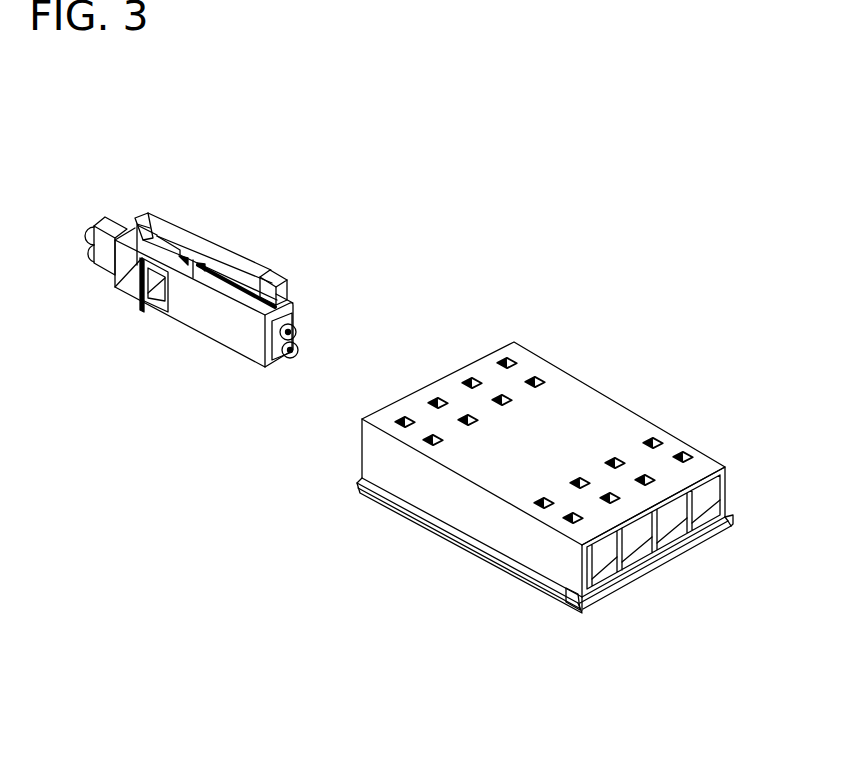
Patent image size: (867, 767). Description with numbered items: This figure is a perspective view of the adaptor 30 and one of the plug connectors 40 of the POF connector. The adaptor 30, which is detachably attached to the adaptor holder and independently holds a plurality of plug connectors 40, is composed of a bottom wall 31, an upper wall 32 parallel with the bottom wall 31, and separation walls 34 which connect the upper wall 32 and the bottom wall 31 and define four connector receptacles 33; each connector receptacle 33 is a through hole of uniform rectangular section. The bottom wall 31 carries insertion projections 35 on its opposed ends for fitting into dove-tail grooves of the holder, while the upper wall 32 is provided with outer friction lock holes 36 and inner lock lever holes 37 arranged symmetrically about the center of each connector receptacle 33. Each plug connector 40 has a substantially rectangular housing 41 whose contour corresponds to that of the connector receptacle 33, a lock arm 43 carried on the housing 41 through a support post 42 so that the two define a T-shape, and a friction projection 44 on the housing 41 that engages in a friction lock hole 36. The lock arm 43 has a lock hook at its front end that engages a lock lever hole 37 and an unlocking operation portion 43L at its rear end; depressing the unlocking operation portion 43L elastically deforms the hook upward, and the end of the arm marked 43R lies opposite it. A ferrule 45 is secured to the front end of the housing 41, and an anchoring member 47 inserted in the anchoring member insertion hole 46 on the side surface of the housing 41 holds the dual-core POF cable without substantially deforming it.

The adaptor 30 is at (623, 364).
The bottom wall 31 is at (635, 578).
The upper wall 32 is at (703, 473).
The connector receptacles 33 is at (703, 512).
The separation walls 34 is at (731, 519).
The insertion projections 35 is at (732, 523).
The friction lock holes 36 is at (510, 361).
The lock lever holes 37 is at (537, 378).
The plug connector 40 is at (257, 198).
The housing 41 is at (218, 333).
The support post 42 is at (193, 278).
The lock arm 43 is at (226, 256).
The latch arm rear end 43R is at (138, 219).
The unlocking operation portion 43L is at (283, 273).
The friction projection 44 is at (116, 281).
The ferrule 45 is at (298, 331).
The anchoring member insertion hole 46 is at (155, 310).
The anchoring member 47 is at (138, 293).